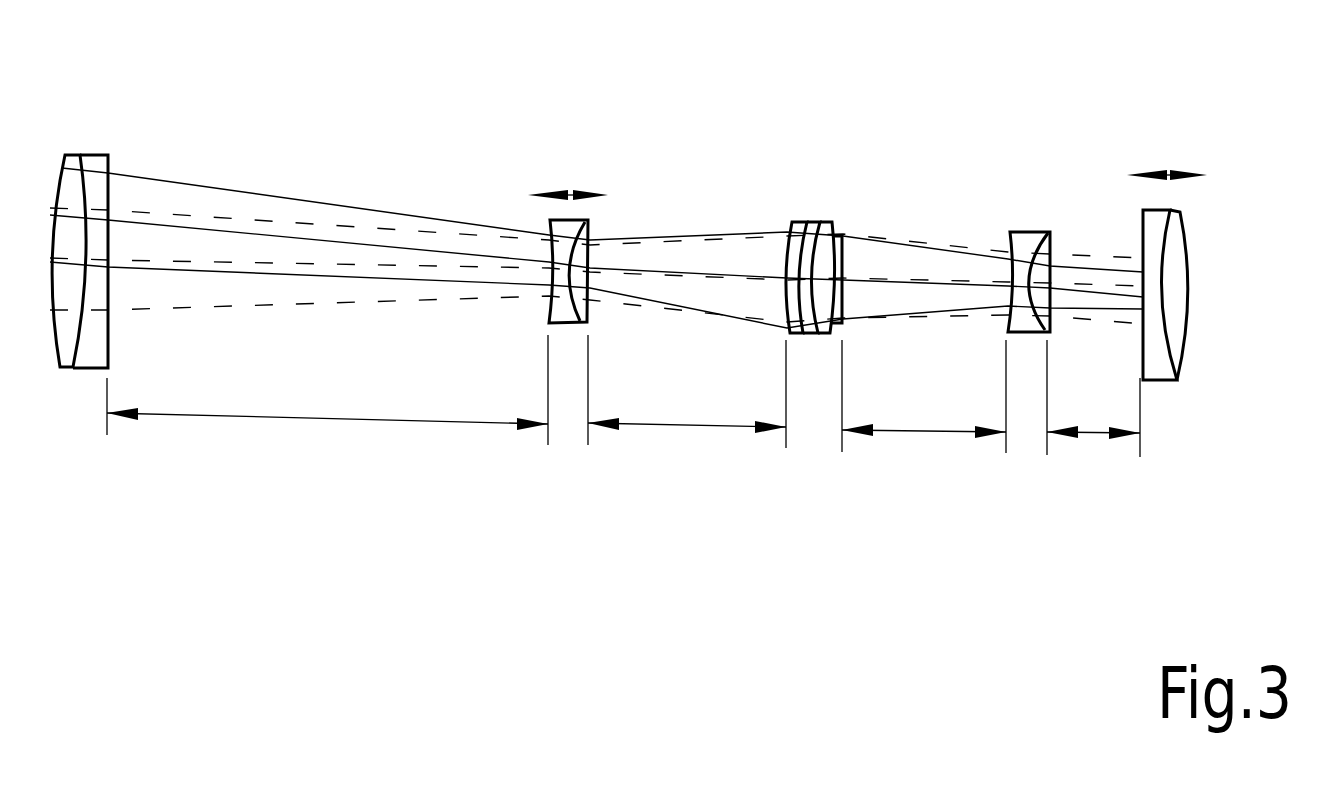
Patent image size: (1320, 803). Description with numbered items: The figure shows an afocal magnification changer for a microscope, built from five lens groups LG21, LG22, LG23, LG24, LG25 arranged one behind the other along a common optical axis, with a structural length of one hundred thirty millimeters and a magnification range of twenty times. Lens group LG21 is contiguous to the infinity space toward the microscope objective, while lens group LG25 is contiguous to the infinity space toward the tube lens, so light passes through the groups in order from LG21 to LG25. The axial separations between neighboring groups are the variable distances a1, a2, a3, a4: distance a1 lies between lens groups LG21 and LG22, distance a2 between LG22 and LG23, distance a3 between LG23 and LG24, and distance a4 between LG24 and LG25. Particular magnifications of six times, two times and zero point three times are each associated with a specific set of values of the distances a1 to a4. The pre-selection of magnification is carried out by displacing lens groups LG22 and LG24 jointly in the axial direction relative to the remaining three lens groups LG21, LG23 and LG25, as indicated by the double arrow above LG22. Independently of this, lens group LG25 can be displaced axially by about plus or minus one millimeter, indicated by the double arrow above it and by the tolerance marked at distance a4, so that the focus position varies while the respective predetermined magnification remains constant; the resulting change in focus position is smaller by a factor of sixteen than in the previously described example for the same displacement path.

The lens group LG21 is at (90, 152).
The lens group LG22 is at (550, 223).
The lens group LG23 is at (813, 220).
The lens group LG24 is at (1023, 223).
The lens group LG25 is at (1190, 223).
The variable distance a1 is at (327, 398).
The variable distance a2 is at (687, 404).
The variable distance a3 is at (924, 409).
The variable distance a4 is at (1091, 442).